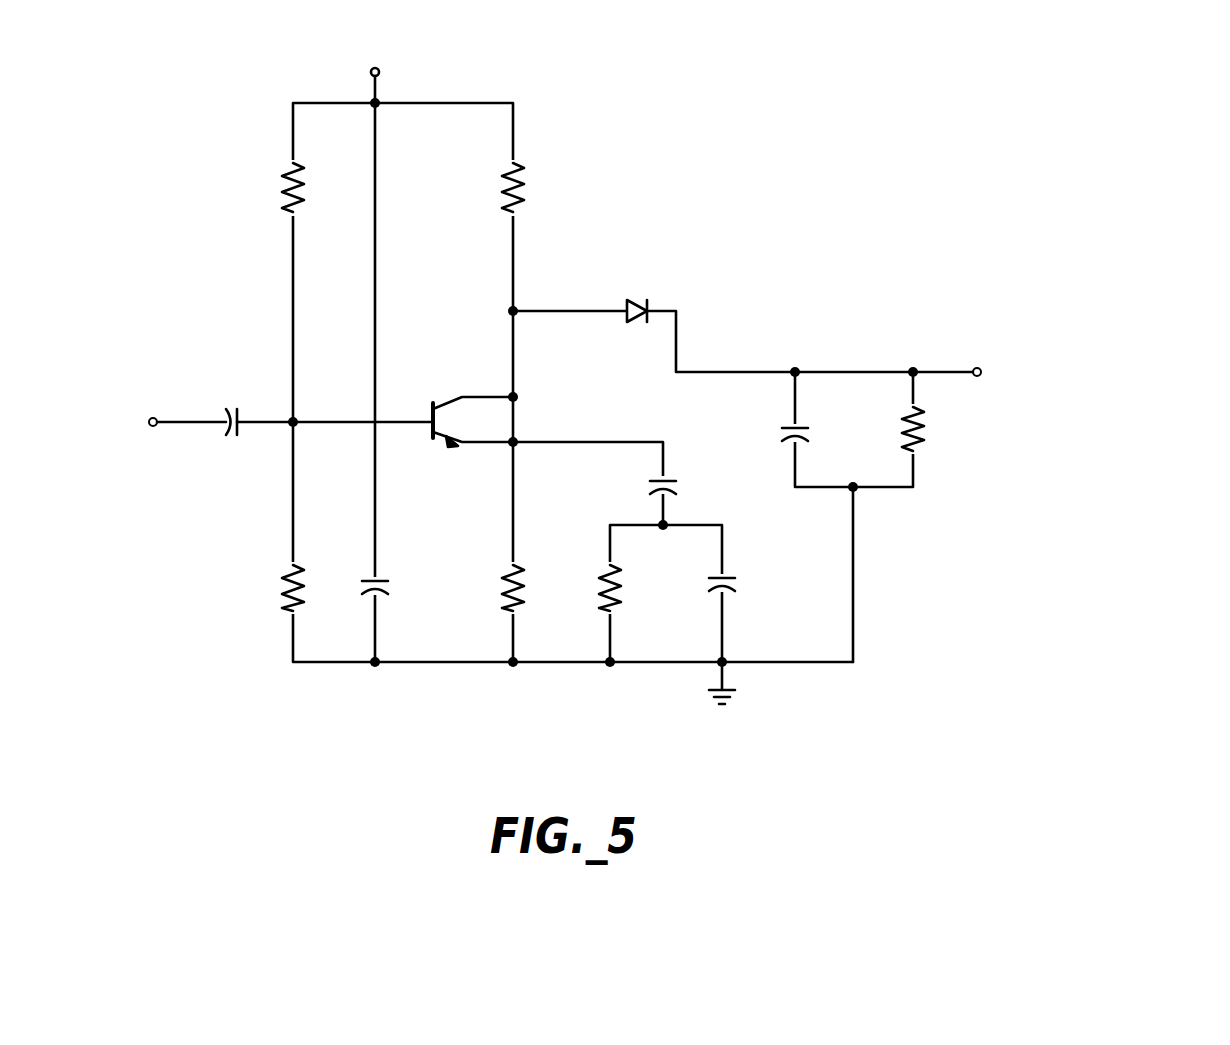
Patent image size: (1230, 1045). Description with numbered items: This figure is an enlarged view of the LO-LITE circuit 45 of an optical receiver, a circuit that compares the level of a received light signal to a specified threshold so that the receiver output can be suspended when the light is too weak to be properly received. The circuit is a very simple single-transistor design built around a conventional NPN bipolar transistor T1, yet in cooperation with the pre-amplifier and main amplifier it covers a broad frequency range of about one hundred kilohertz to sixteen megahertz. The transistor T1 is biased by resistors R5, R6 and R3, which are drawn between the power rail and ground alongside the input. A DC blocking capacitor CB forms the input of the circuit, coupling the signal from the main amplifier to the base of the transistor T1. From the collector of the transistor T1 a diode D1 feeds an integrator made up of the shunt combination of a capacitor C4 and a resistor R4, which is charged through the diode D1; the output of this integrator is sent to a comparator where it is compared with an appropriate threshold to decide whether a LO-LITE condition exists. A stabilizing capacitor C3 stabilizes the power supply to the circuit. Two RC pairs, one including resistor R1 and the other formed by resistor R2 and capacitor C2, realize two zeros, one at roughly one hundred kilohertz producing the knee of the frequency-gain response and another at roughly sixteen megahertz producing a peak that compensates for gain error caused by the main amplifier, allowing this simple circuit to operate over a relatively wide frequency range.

The detector circuit 45 is at (845, 200).
The resistor R5 is at (272, 188).
The resistor R6 is at (492, 188).
The resistor R3 is at (272, 588).
The resistor R1 is at (492, 588).
The resistor R2 is at (589, 588).
The resistor R4 is at (892, 429).
The stabilizing capacitor C3 is at (355, 591).
The capacitor C2 is at (702, 590).
The capacitor C4 is at (775, 435).
The DC blocking capacitor CB is at (212, 408).
The diode D1 is at (618, 301).
The NPN bipolar transistor T1 is at (456, 420).